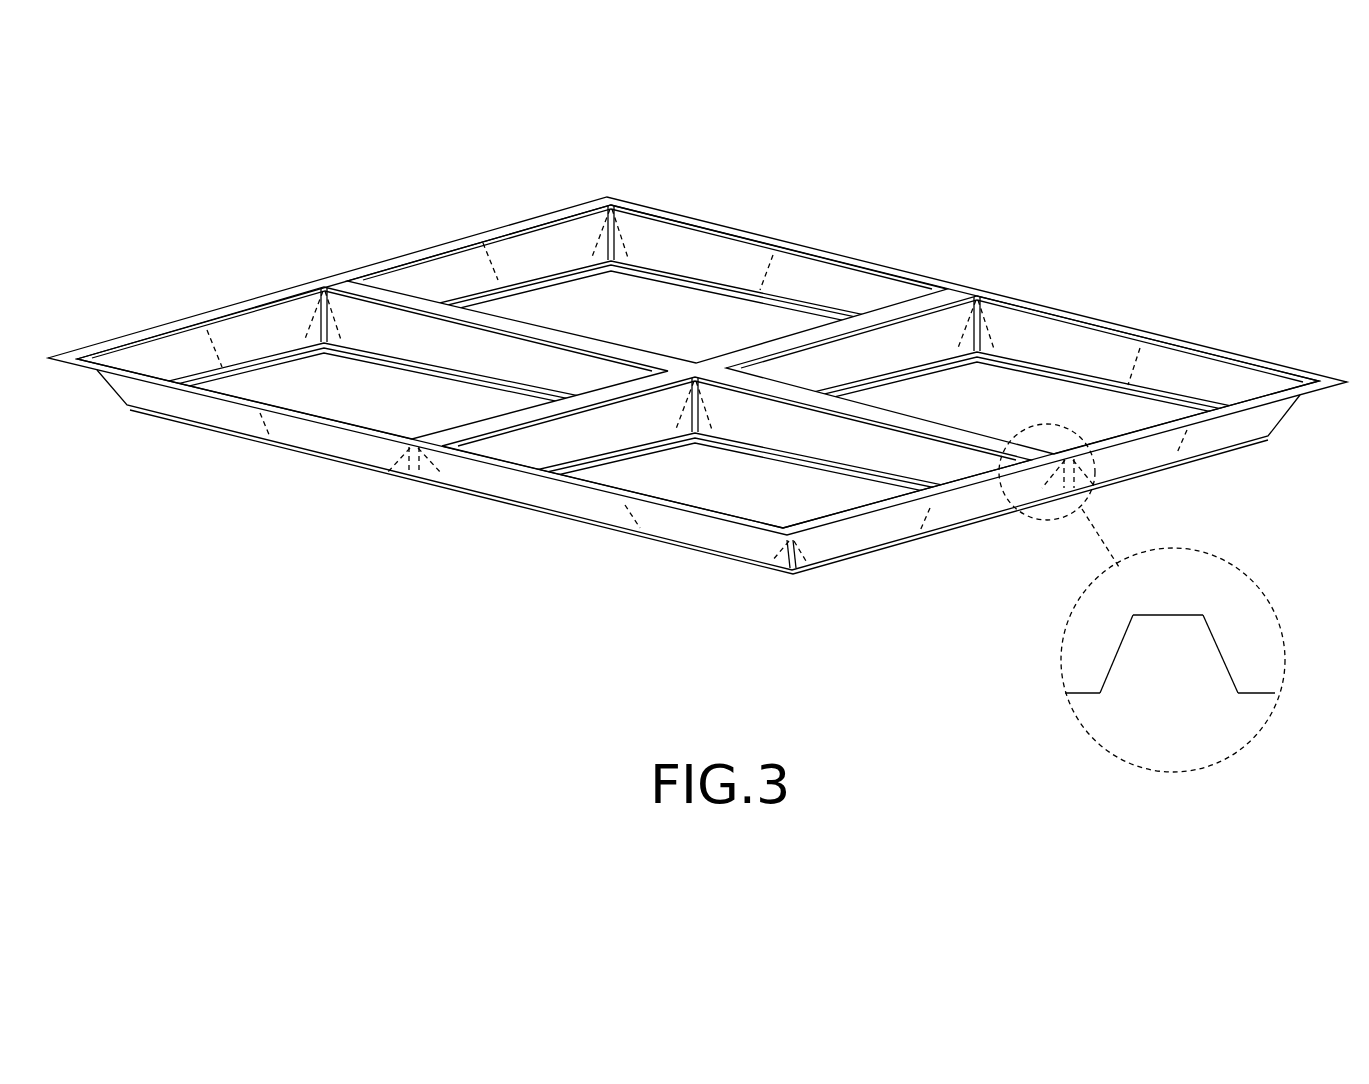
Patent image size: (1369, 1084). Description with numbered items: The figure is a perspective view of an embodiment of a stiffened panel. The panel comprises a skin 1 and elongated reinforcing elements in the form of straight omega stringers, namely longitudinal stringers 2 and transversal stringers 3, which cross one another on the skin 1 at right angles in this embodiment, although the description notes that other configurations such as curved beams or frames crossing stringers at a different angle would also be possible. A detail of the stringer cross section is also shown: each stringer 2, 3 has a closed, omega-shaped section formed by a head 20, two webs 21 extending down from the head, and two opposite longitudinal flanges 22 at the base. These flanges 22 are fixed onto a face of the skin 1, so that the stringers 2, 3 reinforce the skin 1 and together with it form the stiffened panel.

The skin 1 is at (462, 488).
The longitudinal omega stringer 2 is at (893, 467).
The transversal omega stringer 3 is at (930, 340).
The head 20 is at (1203, 600).
The webs 21 is at (1220, 652).
The longitudinal flanges 22 is at (1252, 696).